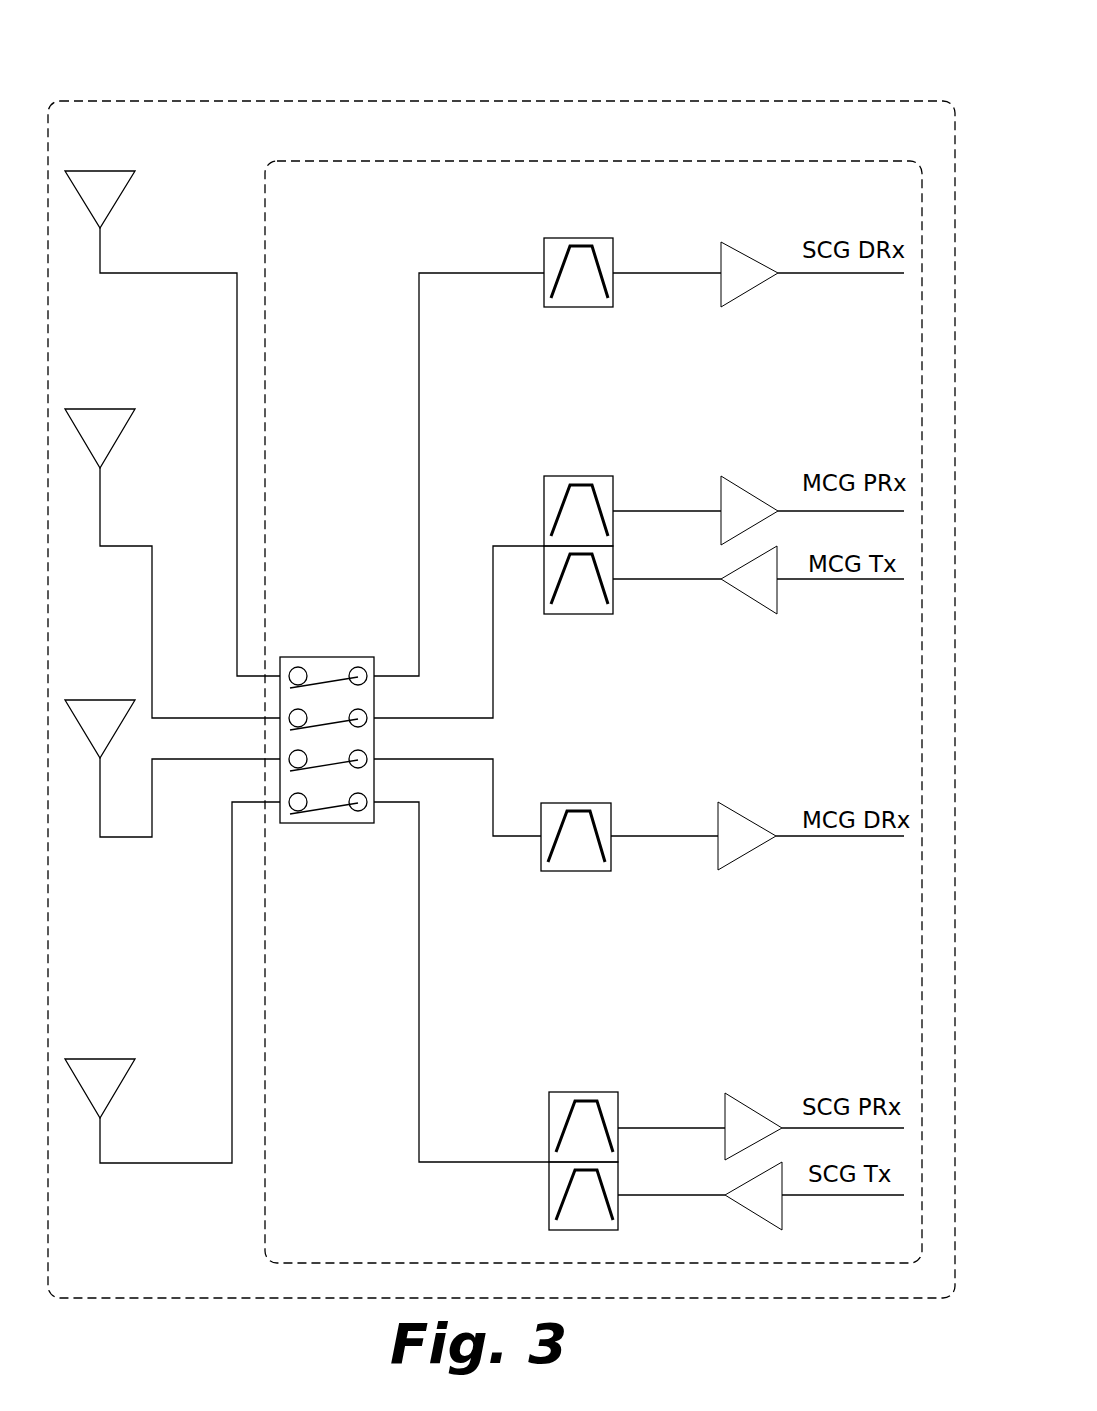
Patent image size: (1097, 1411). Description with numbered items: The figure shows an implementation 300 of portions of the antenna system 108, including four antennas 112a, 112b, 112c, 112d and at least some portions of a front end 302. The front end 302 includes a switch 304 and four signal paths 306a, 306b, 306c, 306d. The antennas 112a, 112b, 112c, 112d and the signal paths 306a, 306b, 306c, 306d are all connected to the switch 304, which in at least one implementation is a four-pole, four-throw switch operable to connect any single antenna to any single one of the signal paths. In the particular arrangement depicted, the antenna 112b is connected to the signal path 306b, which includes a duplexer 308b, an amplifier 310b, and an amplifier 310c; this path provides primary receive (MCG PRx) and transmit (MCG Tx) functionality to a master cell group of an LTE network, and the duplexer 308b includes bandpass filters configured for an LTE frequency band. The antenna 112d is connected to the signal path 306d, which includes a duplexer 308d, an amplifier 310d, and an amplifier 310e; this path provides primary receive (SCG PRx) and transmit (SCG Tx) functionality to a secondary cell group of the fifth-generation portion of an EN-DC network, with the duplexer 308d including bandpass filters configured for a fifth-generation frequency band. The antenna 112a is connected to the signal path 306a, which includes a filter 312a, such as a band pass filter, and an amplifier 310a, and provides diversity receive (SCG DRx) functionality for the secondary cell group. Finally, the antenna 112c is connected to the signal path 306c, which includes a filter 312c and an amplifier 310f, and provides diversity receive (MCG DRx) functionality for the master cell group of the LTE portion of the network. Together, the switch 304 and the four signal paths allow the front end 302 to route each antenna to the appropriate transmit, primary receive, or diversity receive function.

The implementation 300 is at (772, 66).
The antenna system 108 is at (250, 100).
The front end 302 is at (578, 160).
The antenna 112a is at (112, 178).
The antenna 112b is at (101, 408).
The antenna 112c is at (97, 702).
The antenna 112d is at (98, 1058).
The switch 304 is at (330, 655).
The signal path 306a is at (441, 276).
The signal path 306b is at (510, 546).
The signal path 306c is at (497, 787).
The signal path 306d is at (418, 1012).
The filter 312a is at (578, 243).
The filter 312c is at (596, 807).
The duplexer 308b is at (600, 485).
The duplexer 308d is at (607, 1098).
The amplifier 310a is at (730, 250).
The amplifier 310b is at (740, 500).
The amplifier 310c is at (772, 592).
The amplifier 310d is at (745, 1128).
The amplifier 310e is at (755, 1197).
The amplifier 310f is at (742, 822).